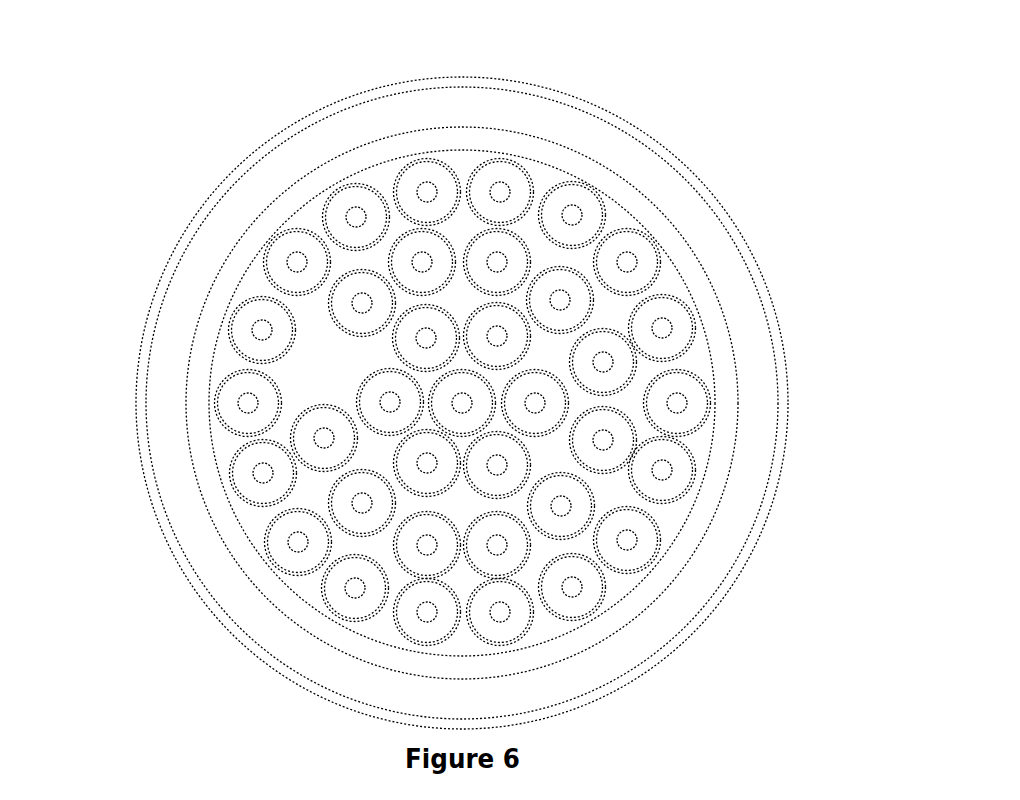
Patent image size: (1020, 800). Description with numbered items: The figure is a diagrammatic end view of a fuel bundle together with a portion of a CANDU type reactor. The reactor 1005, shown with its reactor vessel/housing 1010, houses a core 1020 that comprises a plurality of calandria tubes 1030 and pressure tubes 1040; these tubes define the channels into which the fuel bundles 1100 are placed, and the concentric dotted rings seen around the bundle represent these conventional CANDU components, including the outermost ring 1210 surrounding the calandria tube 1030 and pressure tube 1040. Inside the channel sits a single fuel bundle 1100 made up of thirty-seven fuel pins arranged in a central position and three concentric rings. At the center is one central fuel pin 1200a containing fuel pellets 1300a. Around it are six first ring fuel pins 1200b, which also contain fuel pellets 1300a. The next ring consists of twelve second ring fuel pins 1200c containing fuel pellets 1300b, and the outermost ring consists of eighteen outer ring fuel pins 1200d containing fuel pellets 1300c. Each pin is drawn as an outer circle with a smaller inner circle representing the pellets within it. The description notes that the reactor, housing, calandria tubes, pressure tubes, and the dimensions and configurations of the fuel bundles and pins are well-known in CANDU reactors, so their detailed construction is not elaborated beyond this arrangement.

The reactor 1005 is at (499, 380).
The reactor vessel/housing 1010 is at (499, 380).
The core 1020 is at (499, 380).
The fuel bundle 1100 is at (362, 165).
The outer jacket 1210 is at (683, 178).
The calandria tube 1030 is at (740, 235).
The pressure tube 1040 is at (717, 315).
The central fuel pin 1200a is at (432, 383).
The first ring fuel pin 1200b is at (352, 405).
The second ring fuel pin 1200c is at (340, 515).
The outer ring fuel pin 1200d is at (322, 597).
The fuel pellets 1300a is at (393, 422).
The fuel pellets 1300b is at (340, 455).
The fuel pellets 1300c is at (320, 538).